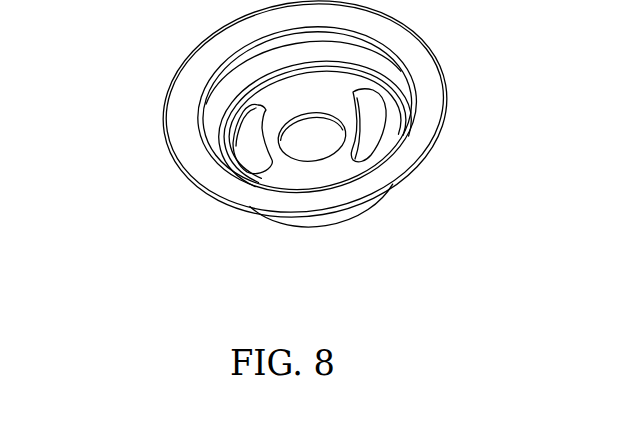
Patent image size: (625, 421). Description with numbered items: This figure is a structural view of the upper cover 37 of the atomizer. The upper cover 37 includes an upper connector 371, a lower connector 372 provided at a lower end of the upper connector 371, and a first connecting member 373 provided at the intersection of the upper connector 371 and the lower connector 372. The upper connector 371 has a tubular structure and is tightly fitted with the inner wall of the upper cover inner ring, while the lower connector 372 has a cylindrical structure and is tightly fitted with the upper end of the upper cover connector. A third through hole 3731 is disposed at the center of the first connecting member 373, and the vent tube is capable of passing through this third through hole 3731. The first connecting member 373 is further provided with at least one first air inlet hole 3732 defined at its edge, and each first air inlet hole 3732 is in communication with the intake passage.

The upper cover 37 is at (150, 50).
The upper connector 371 is at (383, 52).
The lower connector 372 is at (367, 212).
The first connecting member 373 is at (295, 176).
The third through hole 3731 is at (323, 140).
The first air inlet hole 3732 is at (250, 151).